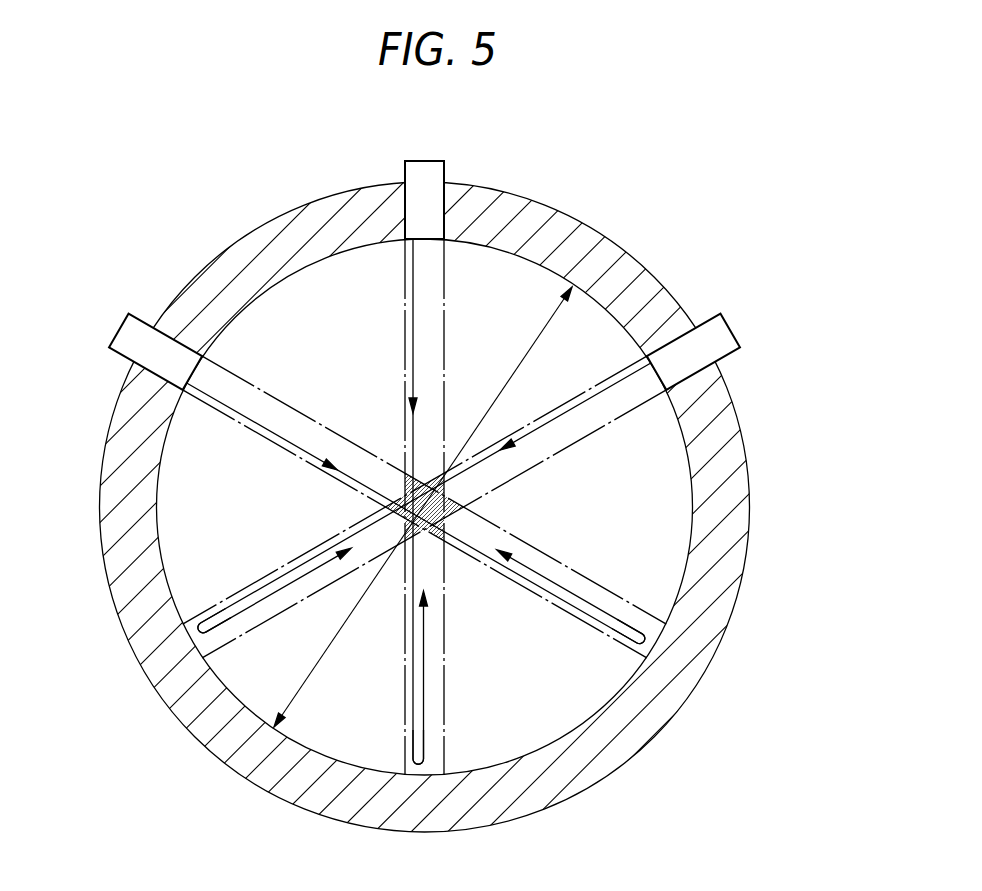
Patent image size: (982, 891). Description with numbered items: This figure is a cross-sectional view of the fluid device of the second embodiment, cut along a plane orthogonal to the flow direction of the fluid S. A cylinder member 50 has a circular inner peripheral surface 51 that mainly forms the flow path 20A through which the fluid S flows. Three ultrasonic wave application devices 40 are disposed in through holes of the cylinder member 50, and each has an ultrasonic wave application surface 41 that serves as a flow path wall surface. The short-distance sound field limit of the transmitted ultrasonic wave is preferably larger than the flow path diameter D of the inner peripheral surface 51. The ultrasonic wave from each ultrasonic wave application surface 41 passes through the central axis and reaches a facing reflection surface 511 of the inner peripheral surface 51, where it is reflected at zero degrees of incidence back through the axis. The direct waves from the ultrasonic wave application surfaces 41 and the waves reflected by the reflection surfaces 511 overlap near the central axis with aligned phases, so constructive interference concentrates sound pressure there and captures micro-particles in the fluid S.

The flow path 20A is at (491, 487).
The ultrasonic wave application device 40 is at (430, 178).
The ultrasonic wave application surface 41 is at (433, 241).
The cylinder member 50 is at (596, 236).
The inner peripheral surface 51 is at (692, 507).
The reflection surface 511 is at (678, 596).
The flow path diameter D is at (423, 507).
The fluid S is at (554, 704).